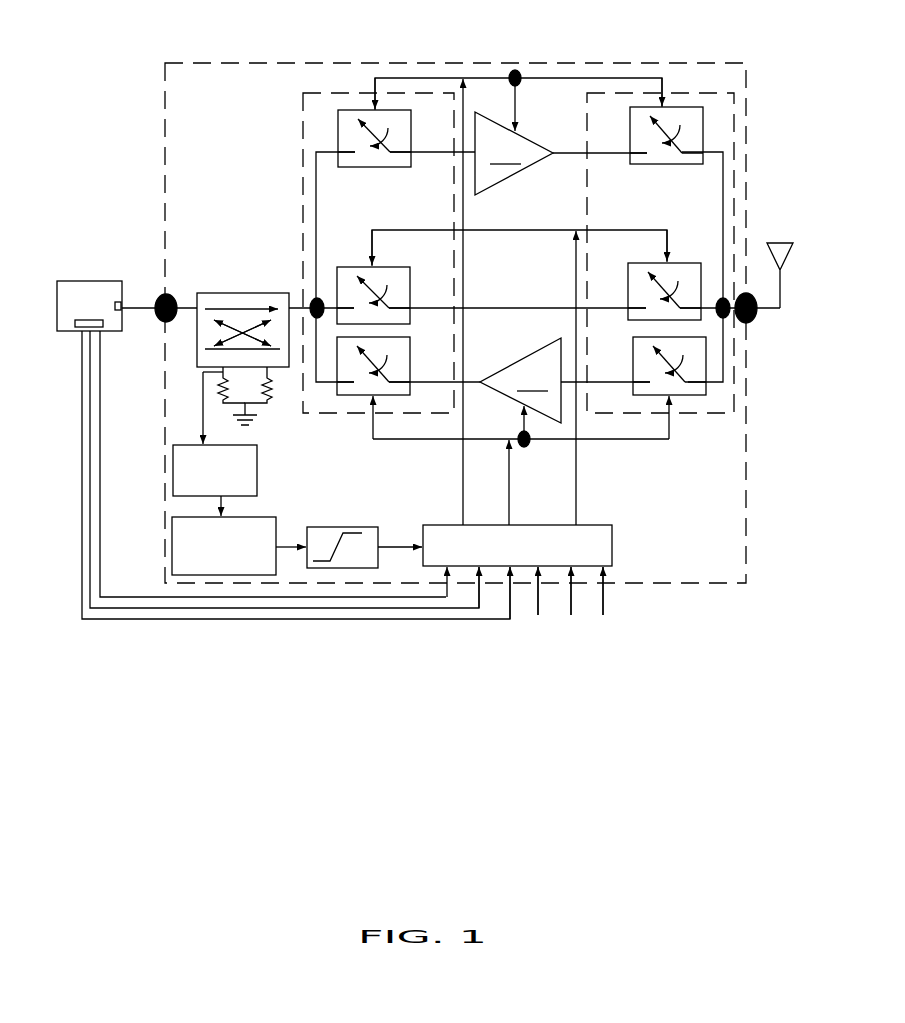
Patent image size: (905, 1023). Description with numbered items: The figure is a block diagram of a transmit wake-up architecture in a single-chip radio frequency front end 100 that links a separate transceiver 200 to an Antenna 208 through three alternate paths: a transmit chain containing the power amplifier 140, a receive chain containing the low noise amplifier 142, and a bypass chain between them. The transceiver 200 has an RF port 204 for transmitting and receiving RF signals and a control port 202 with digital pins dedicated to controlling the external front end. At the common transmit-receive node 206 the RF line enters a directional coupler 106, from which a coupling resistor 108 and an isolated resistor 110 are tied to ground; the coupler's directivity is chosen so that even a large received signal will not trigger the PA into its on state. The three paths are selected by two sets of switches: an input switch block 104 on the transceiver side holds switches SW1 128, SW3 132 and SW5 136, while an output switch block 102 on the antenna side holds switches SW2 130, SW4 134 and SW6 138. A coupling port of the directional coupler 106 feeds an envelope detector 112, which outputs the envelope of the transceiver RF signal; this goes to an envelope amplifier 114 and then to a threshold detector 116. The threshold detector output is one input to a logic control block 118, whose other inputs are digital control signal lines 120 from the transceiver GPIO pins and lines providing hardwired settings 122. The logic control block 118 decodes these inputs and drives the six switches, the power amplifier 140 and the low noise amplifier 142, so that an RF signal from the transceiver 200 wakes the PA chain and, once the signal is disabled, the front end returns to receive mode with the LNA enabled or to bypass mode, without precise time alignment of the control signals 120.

The radio frequency front end 100 is at (335, 63).
The output switch block 102 is at (597, 93).
The input switch block 104 is at (303, 123).
The directional coupler 106 is at (231, 293).
The coupling resistor 108 is at (222, 378).
The isolated resistor 110 is at (270, 380).
The envelope detector 112 is at (258, 472).
The envelope amplifier 114 is at (276, 532).
The threshold detector 116 is at (353, 568).
The logic control block 118 is at (613, 540).
The digital control signal lines 120 is at (80, 593).
The hardwired settings lines 122 is at (536, 620).
The switch SW1 128 is at (377, 168).
The switch SW2 130 is at (668, 165).
The switch SW3 132 is at (358, 266).
The switch SW4 134 is at (680, 263).
The switch SW5 136 is at (409, 337).
The switch SW6 138 is at (633, 337).
The power amplifier 140 is at (514, 153).
The low noise amplifier 142 is at (520, 380).
The transceiver 200 is at (117, 299).
The control port 202 is at (103, 331).
The RF port 204 is at (118, 280).
The TX-RX node 206 is at (158, 295).
The antenna 208 is at (781, 312).